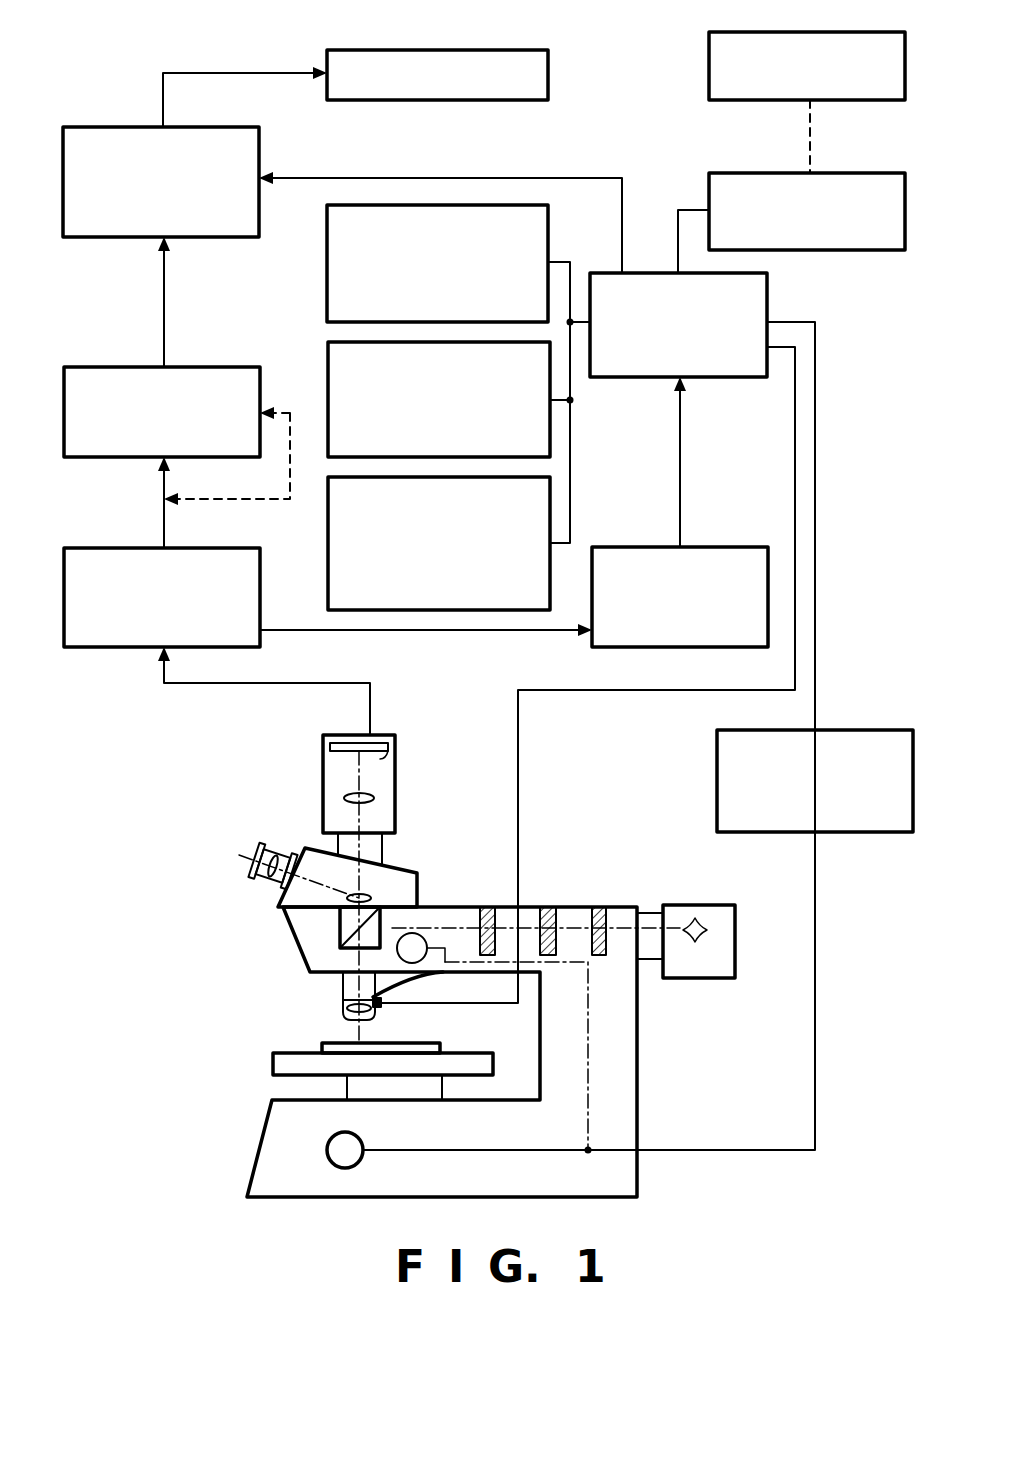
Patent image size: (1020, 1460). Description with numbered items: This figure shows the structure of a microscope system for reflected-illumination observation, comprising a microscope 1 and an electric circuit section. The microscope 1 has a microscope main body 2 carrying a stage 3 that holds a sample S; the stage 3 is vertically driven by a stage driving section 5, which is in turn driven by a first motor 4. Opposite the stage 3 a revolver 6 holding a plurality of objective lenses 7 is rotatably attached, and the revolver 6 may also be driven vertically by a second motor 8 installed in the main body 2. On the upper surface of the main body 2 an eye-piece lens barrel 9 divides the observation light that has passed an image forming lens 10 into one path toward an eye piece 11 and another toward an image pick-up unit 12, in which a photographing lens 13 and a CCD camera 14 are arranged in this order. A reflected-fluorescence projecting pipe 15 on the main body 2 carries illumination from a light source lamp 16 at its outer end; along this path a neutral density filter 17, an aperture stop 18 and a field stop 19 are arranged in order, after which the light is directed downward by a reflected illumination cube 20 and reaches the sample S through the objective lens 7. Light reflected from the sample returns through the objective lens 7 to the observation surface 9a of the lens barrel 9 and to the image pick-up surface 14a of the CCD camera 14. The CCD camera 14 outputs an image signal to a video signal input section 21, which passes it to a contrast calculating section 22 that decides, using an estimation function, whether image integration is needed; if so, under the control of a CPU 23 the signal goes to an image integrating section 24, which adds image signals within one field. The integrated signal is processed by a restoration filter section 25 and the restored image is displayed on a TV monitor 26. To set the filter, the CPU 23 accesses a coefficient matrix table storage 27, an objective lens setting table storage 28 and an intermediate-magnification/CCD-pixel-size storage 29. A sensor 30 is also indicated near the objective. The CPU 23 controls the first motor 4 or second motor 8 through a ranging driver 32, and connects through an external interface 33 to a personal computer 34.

The microscope 1 is at (196, 967).
The microscope main body 2 is at (637, 1100).
The stage 3 is at (272, 1065).
The first motor 4 is at (358, 1141).
The stage driving section 5 is at (346, 1089).
The revolver 6 is at (342, 985).
The objective lens 7 is at (344, 1010).
The second motor 8 is at (416, 934).
The eye-piece lens barrel 9 is at (279, 906).
The observation surface 9a is at (262, 863).
The image forming lens 10 is at (366, 898).
The eye piece 11 is at (295, 841).
The image pick-up unit 12 is at (395, 780).
The photographing lens 13 is at (346, 796).
The CCD camera 14 is at (342, 743).
The image pick-up surface 14a is at (380, 760).
The reflected-fluorescence projecting pipe 15 is at (572, 888).
The light source lamp 16 is at (709, 978).
The neutral density filter 17 is at (599, 907).
The aperture stop 18 is at (548, 907).
The field stop 19 is at (488, 907).
The reflected illumination cube 20 is at (340, 925).
The video signal input section 21 is at (82, 547).
The contrast calculating section 22 is at (746, 546).
The CPU 23 is at (757, 294).
The image integrating section 24 is at (82, 366).
The restoration filter section 25 is at (81, 128).
The TV monitor 26 is at (526, 48).
The coefficient matrix table storage 27 is at (327, 220).
The objective lens setting table storage 28 is at (328, 353).
The intermediate-magnification/CCD-pixel-size storage 29 is at (328, 533).
The sensor 30 is at (380, 1008).
The ranging driver 32 is at (887, 730).
The external interface 33 is at (884, 250).
The personal computer 34 is at (883, 100).